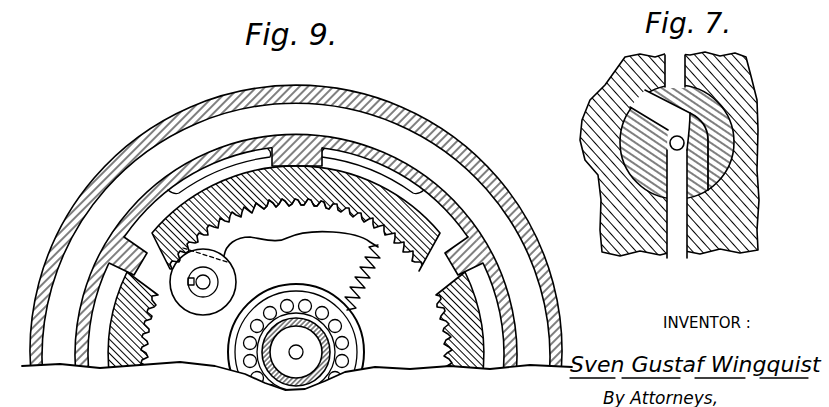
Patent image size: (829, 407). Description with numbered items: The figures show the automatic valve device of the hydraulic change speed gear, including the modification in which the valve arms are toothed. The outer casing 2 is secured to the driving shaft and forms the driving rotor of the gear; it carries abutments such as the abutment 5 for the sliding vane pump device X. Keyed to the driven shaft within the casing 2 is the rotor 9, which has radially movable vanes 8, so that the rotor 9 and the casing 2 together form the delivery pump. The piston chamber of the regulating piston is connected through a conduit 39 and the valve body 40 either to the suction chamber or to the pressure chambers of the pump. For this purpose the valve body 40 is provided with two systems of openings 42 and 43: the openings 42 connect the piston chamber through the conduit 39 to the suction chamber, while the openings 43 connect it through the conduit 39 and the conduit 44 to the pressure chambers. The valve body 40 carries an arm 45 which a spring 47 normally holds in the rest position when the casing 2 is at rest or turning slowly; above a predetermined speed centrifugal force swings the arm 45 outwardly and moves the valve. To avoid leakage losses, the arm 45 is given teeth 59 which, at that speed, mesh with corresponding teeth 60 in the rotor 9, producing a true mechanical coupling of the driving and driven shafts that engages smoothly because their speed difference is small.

In FIG. 9, the outer casing 2 is at (477, 160).
In FIG. 9, the abutment 5 is at (318, 153).
In FIG. 9, the radially movable vanes 8 is at (323, 163).
In FIG. 9, the rotor 9 is at (423, 223).
In FIG. 7, the conduit 39 is at (677, 237).
In FIG. 9, the valve body 40 is at (203, 290).
In FIG. 7, the valve body 40 is at (672, 170).
In FIG. 7, the openings 42 is at (673, 142).
In FIG. 7, the openings 43 is at (700, 112).
In FIG. 7, the conduit 44 is at (675, 62).
In FIG. 9, the arm 45 is at (311, 228).
In FIG. 9, the spring 47 is at (380, 275).
In FIG. 9, the teeth 59 is at (333, 207).
In FIG. 9, the teeth 60 is at (163, 220).